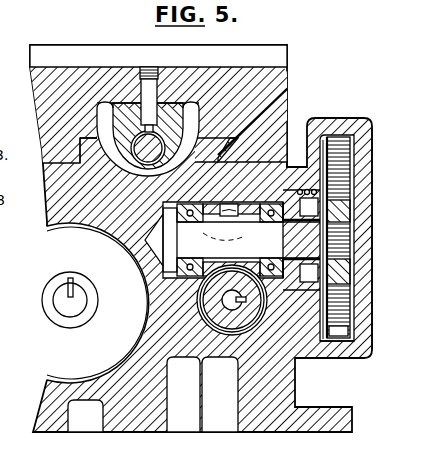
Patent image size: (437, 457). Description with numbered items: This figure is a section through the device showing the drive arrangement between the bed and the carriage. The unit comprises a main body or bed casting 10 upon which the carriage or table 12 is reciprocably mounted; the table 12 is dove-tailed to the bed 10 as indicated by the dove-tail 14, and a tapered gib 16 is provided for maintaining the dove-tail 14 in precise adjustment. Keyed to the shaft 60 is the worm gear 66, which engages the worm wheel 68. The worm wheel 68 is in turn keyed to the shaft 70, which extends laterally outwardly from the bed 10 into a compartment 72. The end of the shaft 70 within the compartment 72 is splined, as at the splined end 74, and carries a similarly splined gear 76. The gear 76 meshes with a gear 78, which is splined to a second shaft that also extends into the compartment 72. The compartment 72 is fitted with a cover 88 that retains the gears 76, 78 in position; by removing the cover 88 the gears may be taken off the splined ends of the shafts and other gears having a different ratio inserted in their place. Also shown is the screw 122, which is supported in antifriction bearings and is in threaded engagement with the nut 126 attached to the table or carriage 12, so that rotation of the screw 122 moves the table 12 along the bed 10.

The bed casting 10 is at (46, 216).
The table 12 is at (53, 72).
The dove-tail 14 is at (80, 140).
The tapered gib 16 is at (288, 97).
The shaft 60 is at (231, 304).
The worm gear 66 is at (216, 300).
The worm wheel 68 is at (212, 257).
The shaft 70 is at (266, 251).
The compartment 72 is at (340, 206).
The splined end 74 is at (371, 207).
The gear 76 is at (371, 147).
The gear 78 is at (337, 332).
The cover 88 is at (358, 358).
The screw 122 is at (240, 64).
The nut 126 is at (128, 128).